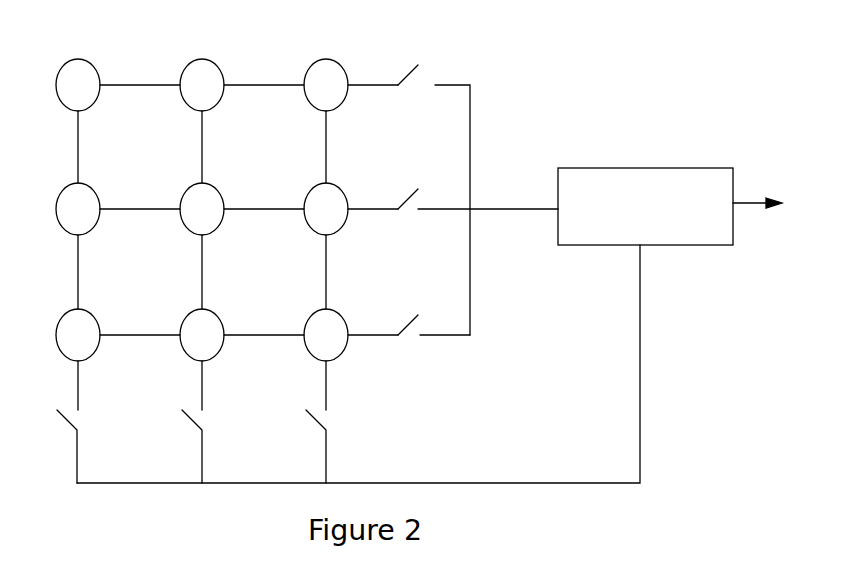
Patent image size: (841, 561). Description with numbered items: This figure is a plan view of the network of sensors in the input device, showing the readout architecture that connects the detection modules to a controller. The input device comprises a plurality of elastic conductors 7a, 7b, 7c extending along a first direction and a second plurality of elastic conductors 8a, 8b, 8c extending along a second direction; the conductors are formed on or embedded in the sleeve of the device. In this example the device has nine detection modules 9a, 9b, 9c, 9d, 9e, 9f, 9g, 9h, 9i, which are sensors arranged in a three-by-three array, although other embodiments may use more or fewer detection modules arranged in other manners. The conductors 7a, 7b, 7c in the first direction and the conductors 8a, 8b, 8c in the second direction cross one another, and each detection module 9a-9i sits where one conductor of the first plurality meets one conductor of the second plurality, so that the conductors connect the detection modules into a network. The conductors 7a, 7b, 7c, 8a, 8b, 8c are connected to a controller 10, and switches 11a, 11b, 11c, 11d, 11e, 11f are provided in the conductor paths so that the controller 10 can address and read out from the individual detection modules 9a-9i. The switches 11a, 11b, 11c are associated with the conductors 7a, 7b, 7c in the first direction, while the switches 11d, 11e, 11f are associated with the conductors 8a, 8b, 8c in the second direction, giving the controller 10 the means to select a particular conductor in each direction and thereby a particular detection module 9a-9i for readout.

The elastic conductor 7a is at (260, 74).
The elastic conductor 7b is at (253, 203).
The elastic conductor 7c is at (253, 334).
The elastic conductor 8a is at (84, 152).
The elastic conductor 8b is at (193, 275).
The elastic conductor 8c is at (335, 296).
The detection module 9a is at (78, 85).
The detection module 9b is at (202, 85).
The detection module 9c is at (326, 85).
The detection module 9d is at (78, 209).
The detection module 9e is at (202, 209).
The detection module 9f is at (326, 209).
The detection module 9g is at (78, 335).
The detection module 9h is at (202, 335).
The detection module 9i is at (326, 335).
The controller 10 is at (670, 206).
The switch 11a is at (409, 60).
The switch 11b is at (410, 182).
The switch 11c is at (410, 343).
The switch 11d is at (87, 424).
The switch 11e is at (210, 418).
The switch 11f is at (335, 423).